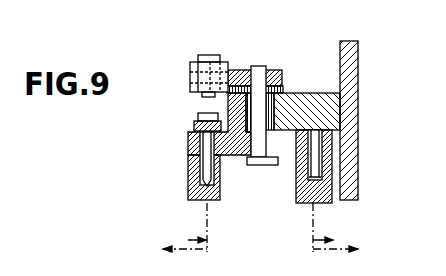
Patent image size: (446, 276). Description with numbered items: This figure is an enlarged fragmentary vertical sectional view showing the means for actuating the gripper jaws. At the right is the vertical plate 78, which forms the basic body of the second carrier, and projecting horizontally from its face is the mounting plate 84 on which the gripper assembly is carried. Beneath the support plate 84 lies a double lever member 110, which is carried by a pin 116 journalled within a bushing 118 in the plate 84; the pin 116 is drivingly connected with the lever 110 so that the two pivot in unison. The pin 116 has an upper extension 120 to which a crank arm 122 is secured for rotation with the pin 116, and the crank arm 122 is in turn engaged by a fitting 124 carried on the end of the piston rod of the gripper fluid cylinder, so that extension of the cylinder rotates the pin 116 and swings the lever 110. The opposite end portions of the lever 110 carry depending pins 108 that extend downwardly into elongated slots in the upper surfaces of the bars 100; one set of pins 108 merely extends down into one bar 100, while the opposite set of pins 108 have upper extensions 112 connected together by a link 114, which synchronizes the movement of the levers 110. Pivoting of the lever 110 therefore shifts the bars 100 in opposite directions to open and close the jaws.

The vertical plate 78 is at (351, 78).
The mounting plate 84 is at (320, 102).
The bar 100 is at (190, 192).
The pin 108 is at (197, 166).
The double lever member 110 is at (190, 140).
The upper extension 112 is at (200, 112).
The link 114 is at (194, 122).
The pin 116 is at (236, 156).
The bushing 118 is at (287, 91).
The upper extension 120 is at (255, 67).
The crank arm 122 is at (230, 66).
The fitting 124 is at (190, 63).